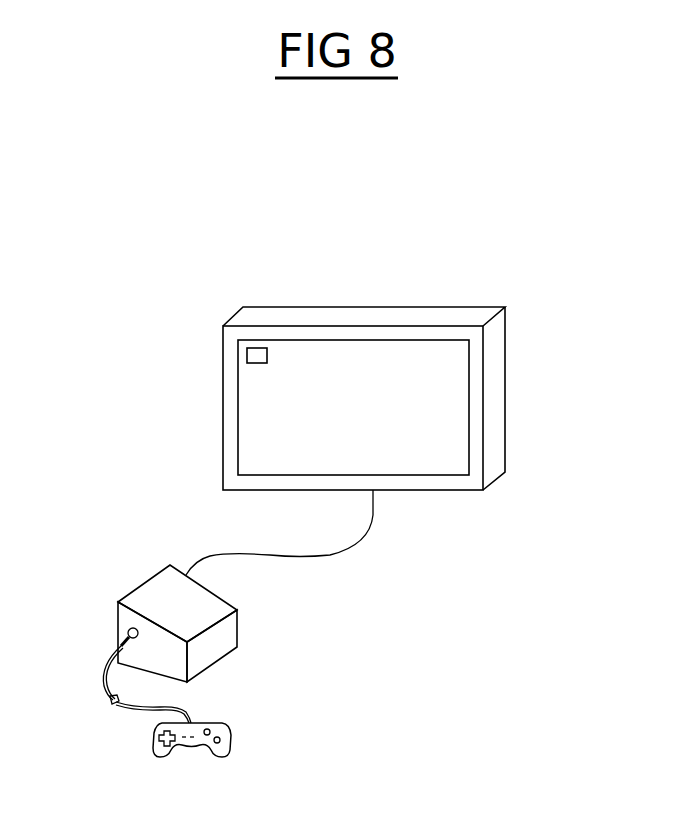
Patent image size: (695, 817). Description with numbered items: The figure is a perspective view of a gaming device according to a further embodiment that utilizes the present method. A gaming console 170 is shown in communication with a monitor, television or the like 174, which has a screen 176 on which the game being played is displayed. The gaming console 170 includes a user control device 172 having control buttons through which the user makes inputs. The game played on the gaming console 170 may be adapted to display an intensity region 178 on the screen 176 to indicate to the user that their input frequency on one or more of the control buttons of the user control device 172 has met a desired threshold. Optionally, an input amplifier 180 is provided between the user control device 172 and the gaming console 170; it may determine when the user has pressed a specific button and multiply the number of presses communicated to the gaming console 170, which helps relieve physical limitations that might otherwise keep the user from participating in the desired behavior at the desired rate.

The gaming console 170 is at (238, 628).
The user control device 172 is at (208, 723).
The monitor, television or the like 174 is at (505, 390).
The screen 176 is at (469, 368).
The intensity region 178 is at (267, 348).
The input amplifier 180 is at (110, 708).